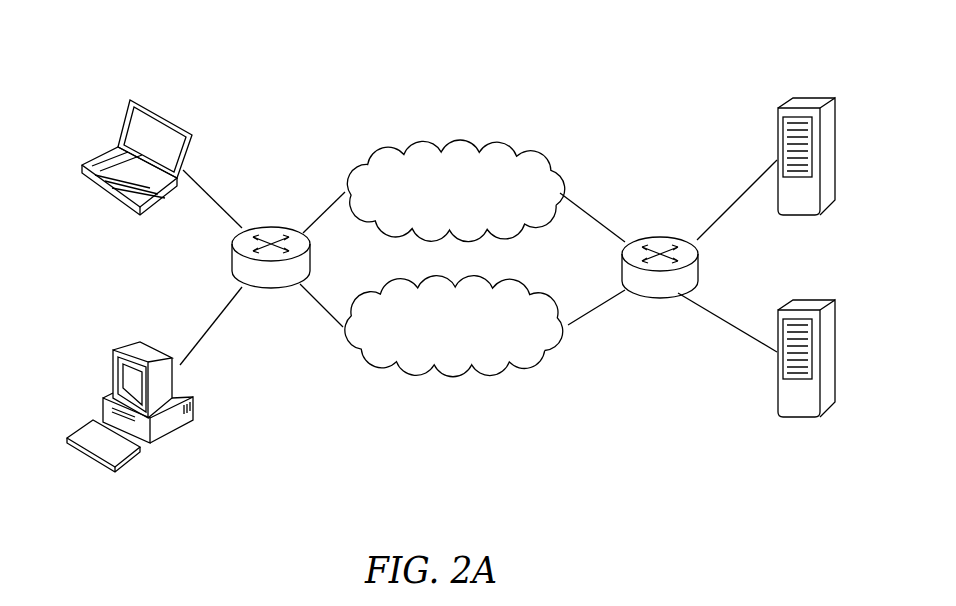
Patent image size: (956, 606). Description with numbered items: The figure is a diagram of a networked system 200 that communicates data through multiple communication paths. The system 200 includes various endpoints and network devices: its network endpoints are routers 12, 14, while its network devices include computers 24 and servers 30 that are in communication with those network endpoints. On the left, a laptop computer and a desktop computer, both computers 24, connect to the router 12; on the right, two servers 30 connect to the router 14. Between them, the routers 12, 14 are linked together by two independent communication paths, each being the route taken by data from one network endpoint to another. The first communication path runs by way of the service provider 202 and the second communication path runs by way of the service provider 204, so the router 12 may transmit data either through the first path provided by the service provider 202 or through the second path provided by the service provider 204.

The system 200 is at (372, 76).
The computers 24 is at (110, 147).
The router 12 is at (233, 256).
The router 14 is at (624, 266).
The service provider 202 is at (455, 191).
The service provider 204 is at (454, 326).
The servers 30 is at (780, 124).